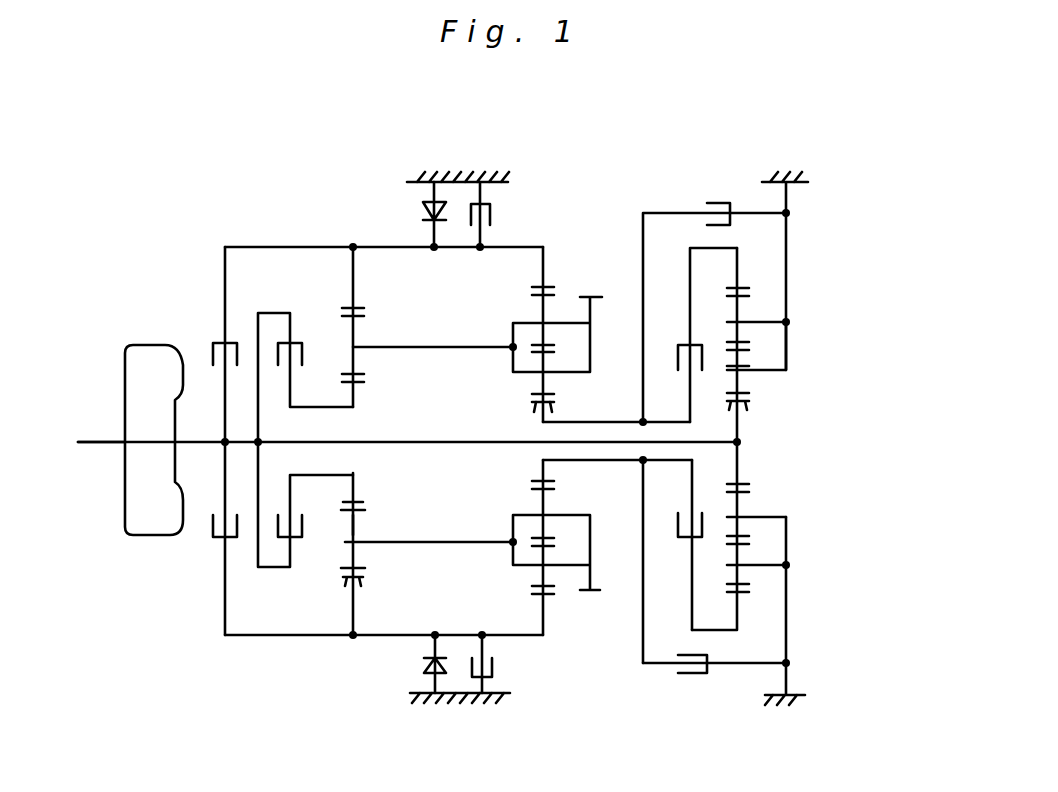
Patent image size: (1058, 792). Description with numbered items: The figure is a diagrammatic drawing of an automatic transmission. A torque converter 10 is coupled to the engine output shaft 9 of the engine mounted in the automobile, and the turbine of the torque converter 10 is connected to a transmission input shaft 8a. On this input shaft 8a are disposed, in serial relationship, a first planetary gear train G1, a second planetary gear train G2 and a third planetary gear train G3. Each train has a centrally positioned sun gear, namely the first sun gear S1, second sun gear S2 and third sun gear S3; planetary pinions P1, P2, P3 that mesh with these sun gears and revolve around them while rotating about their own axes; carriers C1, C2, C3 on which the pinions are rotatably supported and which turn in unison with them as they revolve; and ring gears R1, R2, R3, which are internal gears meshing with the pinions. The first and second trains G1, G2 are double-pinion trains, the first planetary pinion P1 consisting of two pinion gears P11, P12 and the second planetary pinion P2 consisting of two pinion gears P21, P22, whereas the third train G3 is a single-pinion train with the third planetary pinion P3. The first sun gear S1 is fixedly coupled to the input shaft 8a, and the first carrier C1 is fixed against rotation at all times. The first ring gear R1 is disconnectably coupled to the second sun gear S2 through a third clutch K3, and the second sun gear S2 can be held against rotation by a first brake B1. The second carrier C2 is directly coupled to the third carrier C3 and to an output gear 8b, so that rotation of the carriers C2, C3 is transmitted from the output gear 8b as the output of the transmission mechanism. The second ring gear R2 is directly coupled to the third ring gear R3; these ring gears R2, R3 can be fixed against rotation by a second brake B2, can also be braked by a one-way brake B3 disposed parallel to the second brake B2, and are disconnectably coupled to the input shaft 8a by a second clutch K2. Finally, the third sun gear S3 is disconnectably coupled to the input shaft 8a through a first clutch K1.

The torque converter 10 is at (145, 360).
The engine output shaft 9 is at (98, 447).
The transmission input shaft 8a is at (393, 445).
The output gear 8b is at (588, 592).
The first clutch K1 is at (302, 360).
The second clutch K2 is at (210, 348).
The third clutch K3 is at (702, 520).
The first brake B1 is at (693, 672).
The second brake B2 is at (490, 665).
The one-way brake B3 is at (423, 667).
The first planetary gear train G1 is at (808, 427).
The second planetary gear train G2 is at (481, 276).
The third planetary gear train G3 is at (398, 259).
The first ring gear R1 is at (742, 292).
The second ring gear R2 is at (540, 288).
The third ring gear R3 is at (357, 582).
The first sun gear S1 is at (742, 405).
The second sun gear S2 is at (540, 403).
The third sun gear S3 is at (358, 500).
The first carrier C1 is at (788, 333).
The second carrier C2 is at (513, 323).
The third carrier C3 is at (367, 543).
The first planetary pinion P1 is at (833, 359).
The pinion gear P11 is at (740, 360).
The pinion gear P12 is at (740, 333).
The second planetary pinion P2 is at (435, 357).
The pinion gear P21 is at (537, 385).
The pinion gear P22 is at (540, 333).
The third planetary pinion P3 is at (357, 527).